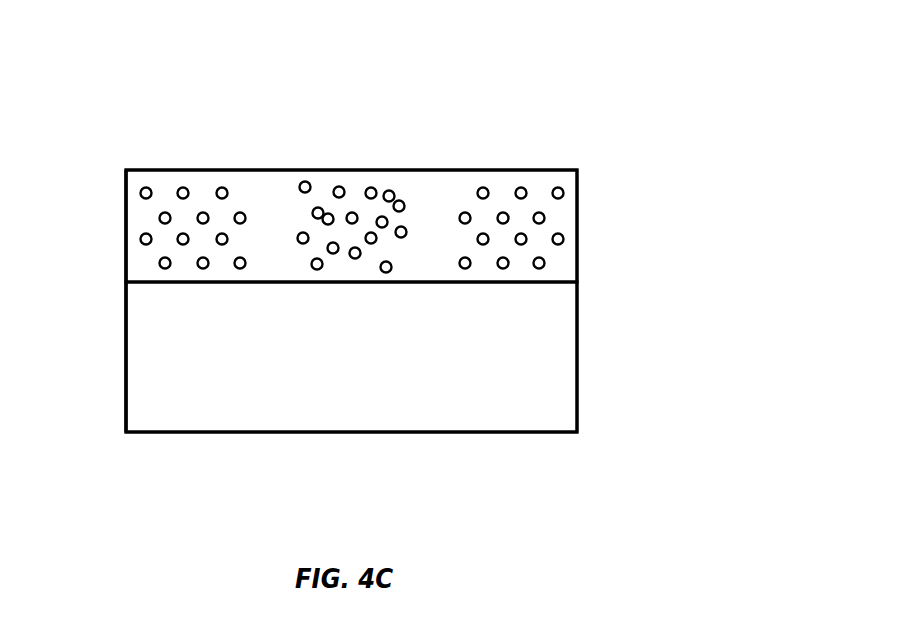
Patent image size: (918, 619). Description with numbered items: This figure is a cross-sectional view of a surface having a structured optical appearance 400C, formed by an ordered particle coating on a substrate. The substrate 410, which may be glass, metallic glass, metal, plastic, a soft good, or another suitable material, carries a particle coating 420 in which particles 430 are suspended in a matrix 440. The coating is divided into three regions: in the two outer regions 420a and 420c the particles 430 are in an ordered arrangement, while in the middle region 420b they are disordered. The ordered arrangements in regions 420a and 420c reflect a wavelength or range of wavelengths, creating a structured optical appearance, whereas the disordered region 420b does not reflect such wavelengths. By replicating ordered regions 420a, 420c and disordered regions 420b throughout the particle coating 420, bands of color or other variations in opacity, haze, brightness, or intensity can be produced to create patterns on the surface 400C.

The surface having a structured optical appearance 400C is at (603, 90).
The substrate 410 is at (578, 351).
The particle coating 420 is at (578, 253).
The region 420a is at (248, 148).
The region 420b is at (406, 150).
The region 420c is at (573, 150).
The particles 430 is at (527, 237).
The matrix 440 is at (140, 217).